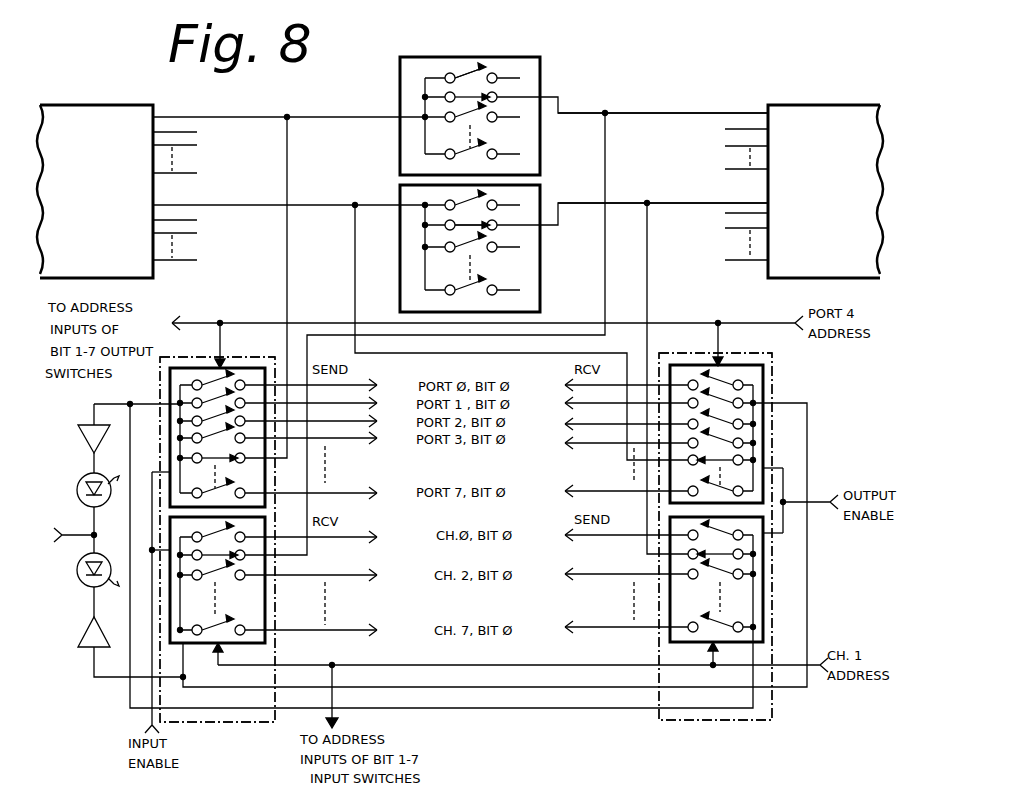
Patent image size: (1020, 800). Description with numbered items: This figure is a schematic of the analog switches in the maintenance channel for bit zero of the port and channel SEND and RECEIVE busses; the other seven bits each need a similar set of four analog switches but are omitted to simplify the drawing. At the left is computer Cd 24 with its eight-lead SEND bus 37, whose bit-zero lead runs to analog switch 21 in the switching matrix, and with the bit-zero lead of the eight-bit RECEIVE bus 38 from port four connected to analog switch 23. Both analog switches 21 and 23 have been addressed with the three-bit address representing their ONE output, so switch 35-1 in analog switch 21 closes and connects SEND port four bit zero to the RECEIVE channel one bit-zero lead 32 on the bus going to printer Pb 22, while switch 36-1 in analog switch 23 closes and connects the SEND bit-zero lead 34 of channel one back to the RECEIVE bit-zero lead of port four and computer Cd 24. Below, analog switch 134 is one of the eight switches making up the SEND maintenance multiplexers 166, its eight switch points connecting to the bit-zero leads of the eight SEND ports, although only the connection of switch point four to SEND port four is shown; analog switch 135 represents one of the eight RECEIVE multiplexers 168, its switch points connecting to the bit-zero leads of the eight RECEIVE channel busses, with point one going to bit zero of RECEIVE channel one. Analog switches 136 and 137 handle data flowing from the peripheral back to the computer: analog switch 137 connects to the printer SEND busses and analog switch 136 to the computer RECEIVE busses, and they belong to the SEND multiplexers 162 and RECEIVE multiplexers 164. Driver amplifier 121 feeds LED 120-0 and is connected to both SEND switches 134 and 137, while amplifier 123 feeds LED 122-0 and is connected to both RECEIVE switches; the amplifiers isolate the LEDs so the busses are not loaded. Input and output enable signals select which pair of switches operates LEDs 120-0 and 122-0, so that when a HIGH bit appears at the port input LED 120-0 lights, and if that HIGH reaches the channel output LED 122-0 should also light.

The computer Cd 24 is at (65, 105).
The printer Pb 22 is at (862, 108).
The SEND bus 37 is at (199, 110).
The RECEIVE bus 38 is at (178, 263).
The analog switch 21 is at (540, 78).
The analog switch 23 is at (528, 276).
The switch 35-1 is at (464, 92).
The switch 36-1 is at (468, 222).
The receive channel 1 lines 32 is at (752, 102).
The send channel 1 lines 34 is at (748, 268).
The analog switch 134 is at (248, 374).
The analog switch 135 is at (260, 646).
The analog switch 136 is at (750, 376).
The analog switch 137 is at (680, 636).
The driver amplifier 121 is at (88, 436).
The LED 120-0 is at (80, 494).
The LED 122-0 is at (82, 580).
The amplifier 123 is at (82, 645).
The SEND maintenance multiplexers 166 is at (260, 734).
The RECEIVE maintenance multiplexers 168 is at (217, 539).
The SEND multiplexers 162 is at (702, 734).
The RECEIVE multiplexers 164 is at (715, 536).